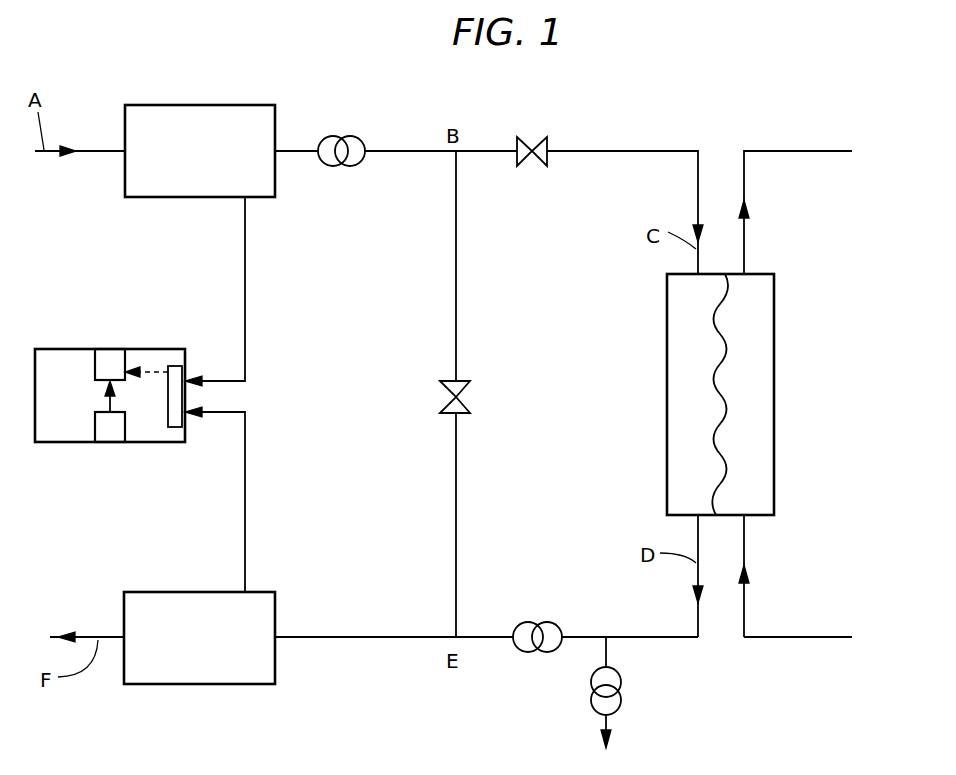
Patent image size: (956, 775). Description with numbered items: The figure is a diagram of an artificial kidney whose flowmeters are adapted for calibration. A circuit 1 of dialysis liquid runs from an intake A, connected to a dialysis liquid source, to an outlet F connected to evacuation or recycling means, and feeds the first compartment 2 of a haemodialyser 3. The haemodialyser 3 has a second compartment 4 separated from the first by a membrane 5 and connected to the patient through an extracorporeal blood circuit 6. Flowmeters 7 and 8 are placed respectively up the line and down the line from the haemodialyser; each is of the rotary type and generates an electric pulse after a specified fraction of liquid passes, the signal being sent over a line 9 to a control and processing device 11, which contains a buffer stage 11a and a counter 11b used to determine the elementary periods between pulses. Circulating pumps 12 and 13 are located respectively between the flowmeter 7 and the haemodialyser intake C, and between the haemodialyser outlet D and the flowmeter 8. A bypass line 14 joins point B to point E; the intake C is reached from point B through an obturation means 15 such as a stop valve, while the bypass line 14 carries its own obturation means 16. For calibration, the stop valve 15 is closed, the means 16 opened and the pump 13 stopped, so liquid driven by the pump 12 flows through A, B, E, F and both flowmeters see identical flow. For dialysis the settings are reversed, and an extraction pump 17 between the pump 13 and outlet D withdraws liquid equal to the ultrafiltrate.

The circuit of a dialysis liquid 1 is at (610, 151).
The first compartment 2 is at (693, 400).
The haemodialyser 3 is at (776, 342).
The second compartment 4 is at (749, 400).
The membrane 5 is at (728, 470).
The extracorporeal blood circuit 6 is at (773, 151).
The flowmeter 7 is at (217, 105).
The flowmeter 8 is at (193, 684).
The line 9 is at (245, 307).
The control and processing device 11 is at (110, 394).
The buffer stage 11a is at (108, 352).
The counter 11b is at (110, 428).
The circulating pump 12 is at (348, 137).
The circulating pump 13 is at (540, 623).
The bypass line 14 is at (456, 310).
The obturation means 15 is at (546, 138).
The obturation means 16 is at (460, 397).
The extraction pump 17 is at (619, 688).